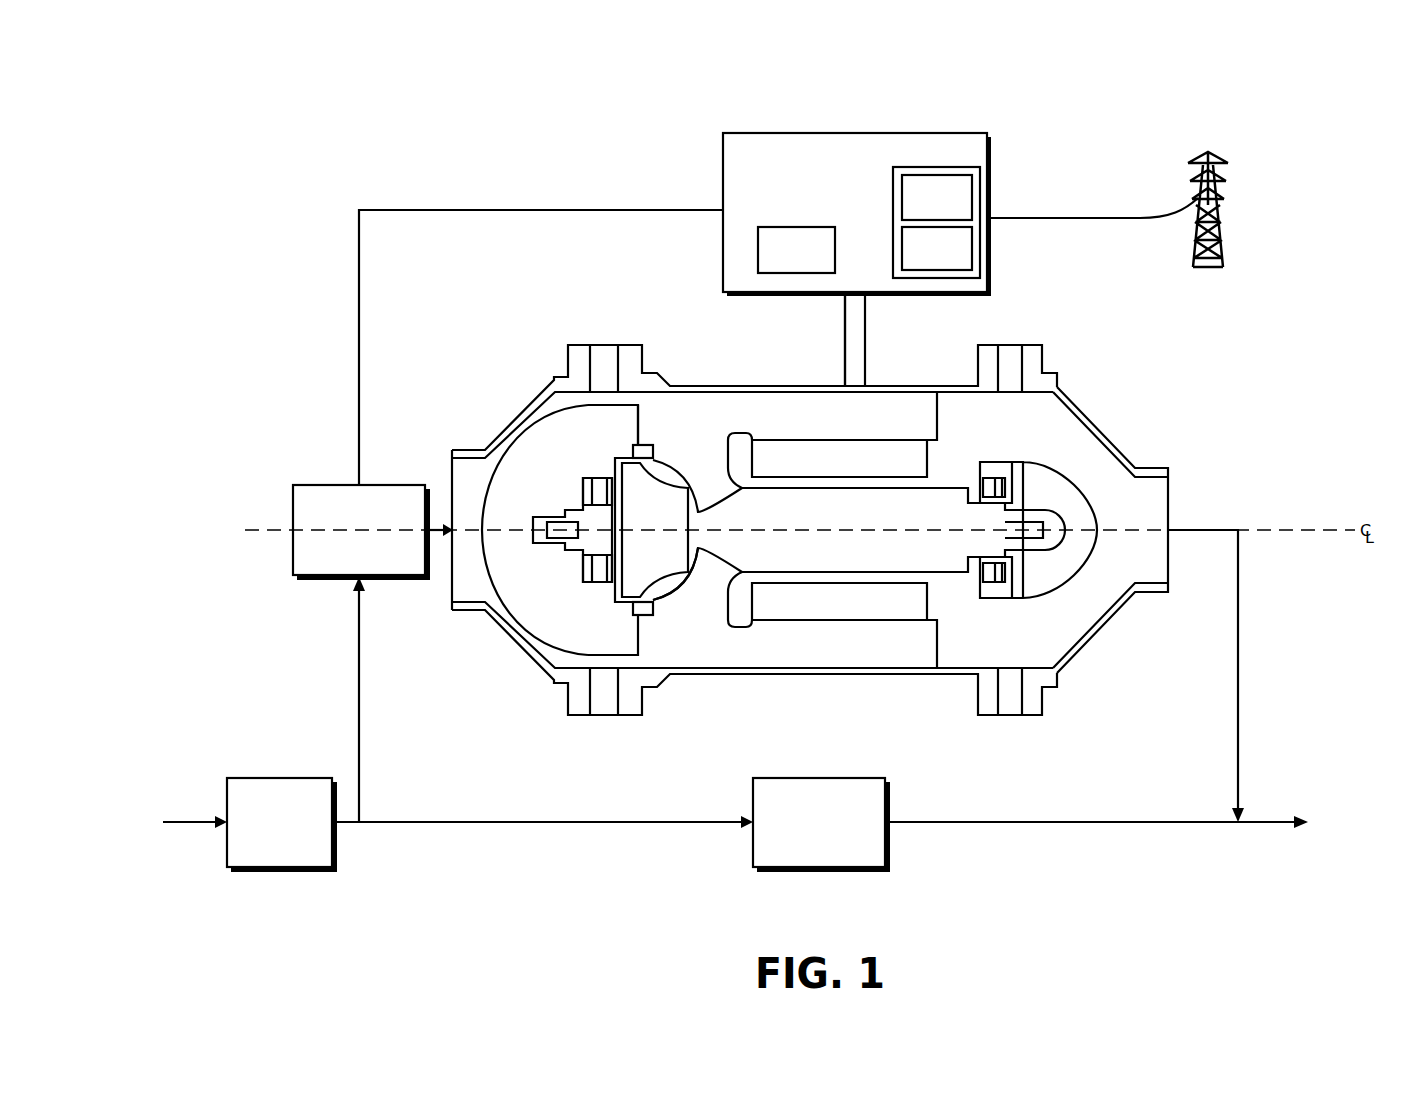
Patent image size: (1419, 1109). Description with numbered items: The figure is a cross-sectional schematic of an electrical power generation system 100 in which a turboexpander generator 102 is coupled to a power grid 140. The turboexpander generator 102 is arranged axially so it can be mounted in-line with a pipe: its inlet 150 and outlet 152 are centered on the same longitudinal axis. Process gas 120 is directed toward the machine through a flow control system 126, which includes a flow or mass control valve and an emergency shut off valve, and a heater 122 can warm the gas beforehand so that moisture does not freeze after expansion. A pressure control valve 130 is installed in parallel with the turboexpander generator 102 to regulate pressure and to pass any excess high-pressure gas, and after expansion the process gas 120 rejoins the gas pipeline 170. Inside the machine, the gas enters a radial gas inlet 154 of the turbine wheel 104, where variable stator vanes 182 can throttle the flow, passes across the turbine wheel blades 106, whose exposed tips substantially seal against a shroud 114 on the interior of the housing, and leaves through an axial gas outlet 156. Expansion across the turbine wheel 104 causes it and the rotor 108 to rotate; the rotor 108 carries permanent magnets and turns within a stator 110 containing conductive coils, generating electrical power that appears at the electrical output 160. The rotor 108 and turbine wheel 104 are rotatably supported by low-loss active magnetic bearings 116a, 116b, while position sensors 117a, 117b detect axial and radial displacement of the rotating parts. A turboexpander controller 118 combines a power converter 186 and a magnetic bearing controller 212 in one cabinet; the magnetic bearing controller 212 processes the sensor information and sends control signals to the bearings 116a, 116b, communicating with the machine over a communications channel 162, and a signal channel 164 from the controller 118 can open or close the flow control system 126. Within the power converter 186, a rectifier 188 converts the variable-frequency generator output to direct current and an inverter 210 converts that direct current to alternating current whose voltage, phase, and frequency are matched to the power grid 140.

The electrical power generation system 100 is at (225, 160).
The turboexpander generator 102 is at (497, 383).
The turbine wheel 104 is at (674, 545).
The turbine wheel blades 106 is at (668, 585).
The rotor 108 is at (859, 565).
The stator 110 is at (859, 475).
The shroud 114 is at (657, 600).
The bearing 116a is at (600, 583).
The bearing 116b is at (988, 463).
The position sensor 117a is at (610, 582).
The position sensor 117b is at (1005, 465).
The turboexpander controller 118 is at (987, 142).
The process gas 120 is at (359, 655).
The heater 122 is at (280, 778).
The flow control system 126 is at (335, 485).
The pressure control valve 130 is at (775, 778).
The power grid 140 is at (1222, 258).
The inlet 150 is at (452, 470).
The outlet 152 is at (1170, 497).
The radial gas inlet 154 is at (640, 400).
The axial gas outlet 156 is at (705, 480).
The electrical output 160 is at (866, 362).
The communications channel 162 is at (845, 332).
The signal channel 164 is at (541, 210).
The gas pipeline 170 is at (1153, 825).
The variable stator vanes 182 is at (633, 447).
The power converter 186 is at (982, 198).
The rectifier 188 is at (959, 218).
The inverter 210 is at (959, 269).
The magnetic bearing controller 212 is at (819, 273).